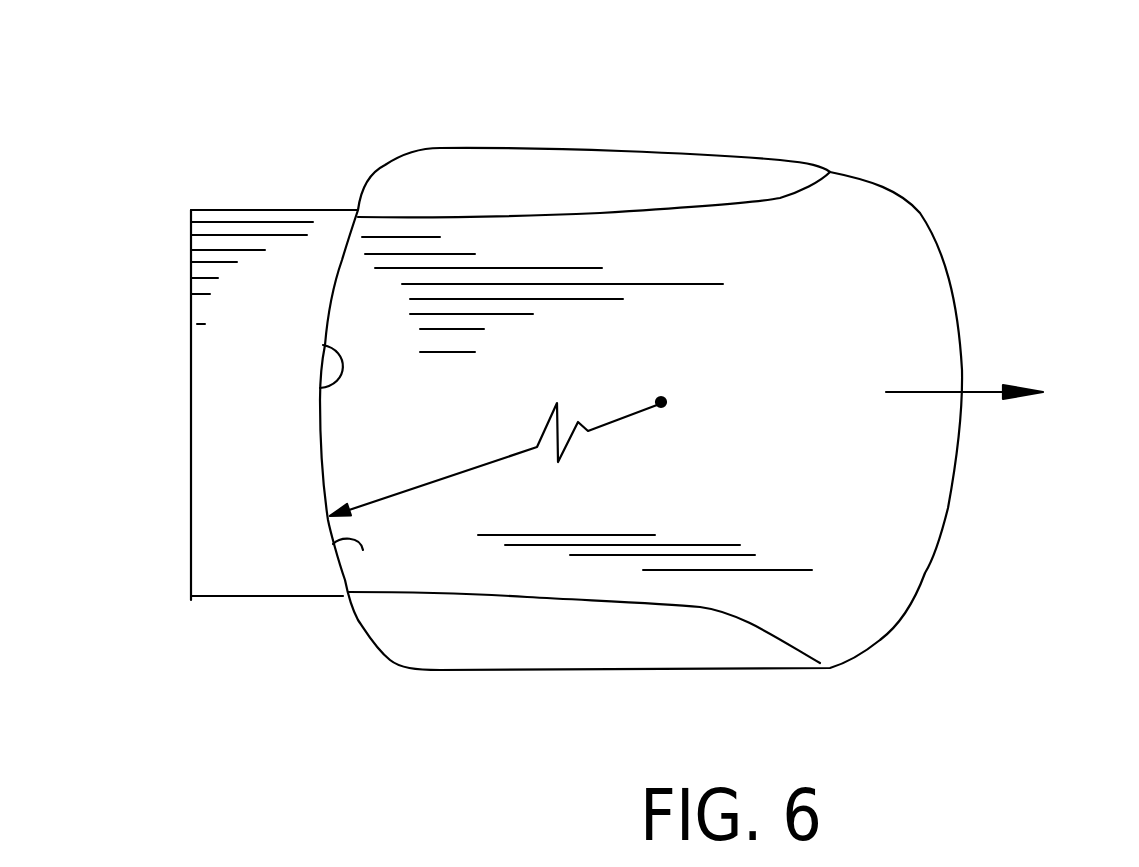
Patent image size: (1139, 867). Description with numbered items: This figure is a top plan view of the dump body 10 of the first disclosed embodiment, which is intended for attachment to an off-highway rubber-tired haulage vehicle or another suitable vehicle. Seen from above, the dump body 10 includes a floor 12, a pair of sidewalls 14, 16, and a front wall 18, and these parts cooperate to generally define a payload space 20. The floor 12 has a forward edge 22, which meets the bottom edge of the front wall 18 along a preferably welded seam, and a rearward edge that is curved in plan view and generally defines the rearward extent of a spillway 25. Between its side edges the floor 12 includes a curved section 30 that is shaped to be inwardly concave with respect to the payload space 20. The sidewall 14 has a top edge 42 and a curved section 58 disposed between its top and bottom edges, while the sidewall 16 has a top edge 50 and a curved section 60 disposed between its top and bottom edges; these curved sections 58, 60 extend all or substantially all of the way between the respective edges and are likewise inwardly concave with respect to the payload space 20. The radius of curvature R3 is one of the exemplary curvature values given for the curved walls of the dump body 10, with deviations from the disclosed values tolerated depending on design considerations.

The dump body 10 is at (828, 128).
The floor 12 is at (880, 328).
The sidewall 14 is at (702, 640).
The sidewall 16 is at (680, 173).
The front wall 18 is at (323, 345).
The payload space 20 is at (832, 262).
The forward edge 22 is at (363, 550).
The spillway 25 is at (972, 395).
The curved section 30 is at (868, 548).
The top edge 42 is at (527, 597).
The top edge 50 is at (495, 218).
The curved section 58 is at (620, 630).
The curved section 60 is at (596, 175).
The radius of curvature R3 is at (612, 420).